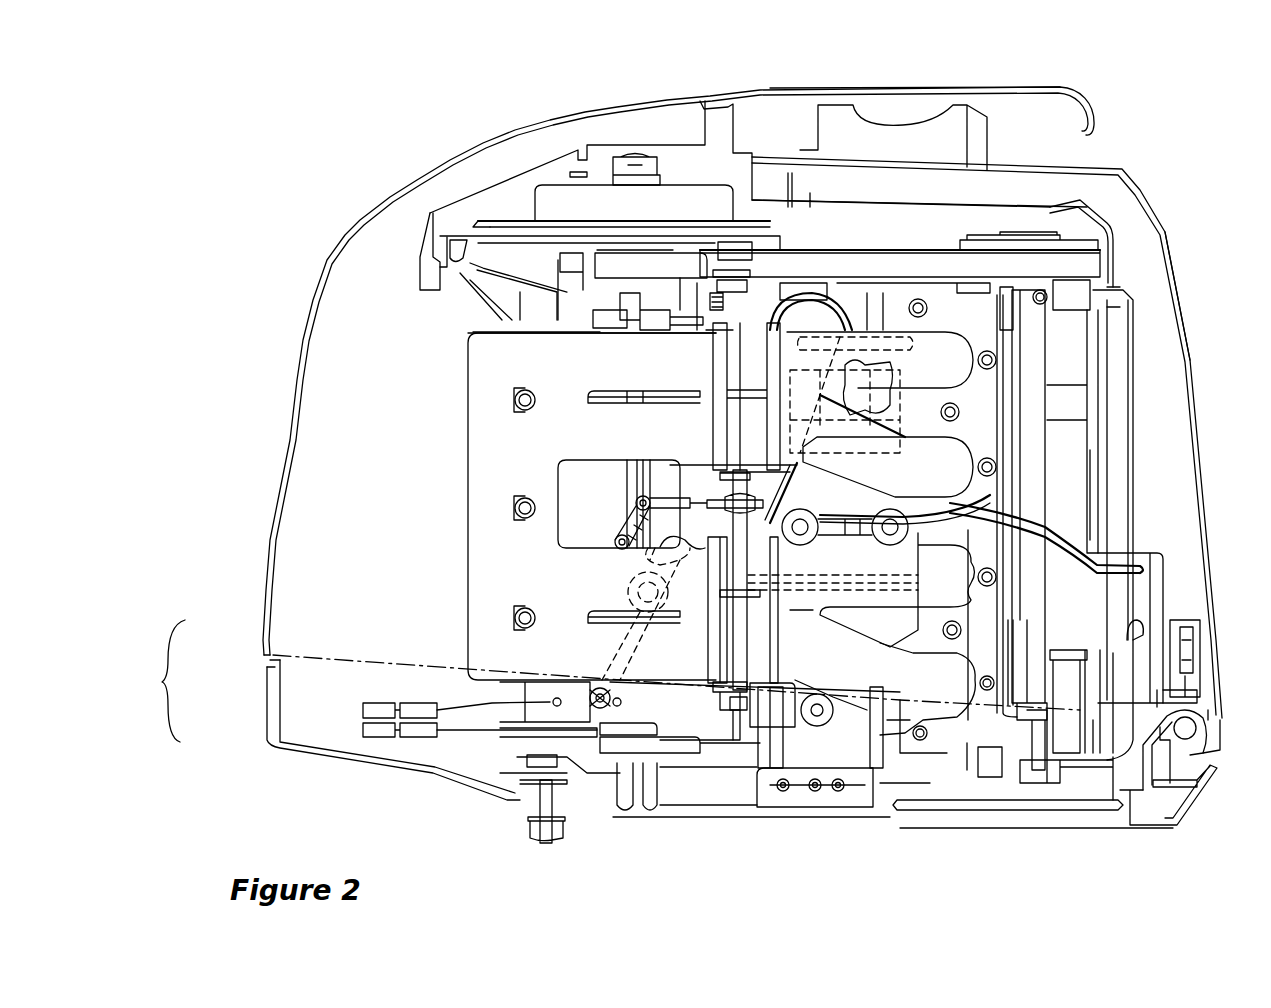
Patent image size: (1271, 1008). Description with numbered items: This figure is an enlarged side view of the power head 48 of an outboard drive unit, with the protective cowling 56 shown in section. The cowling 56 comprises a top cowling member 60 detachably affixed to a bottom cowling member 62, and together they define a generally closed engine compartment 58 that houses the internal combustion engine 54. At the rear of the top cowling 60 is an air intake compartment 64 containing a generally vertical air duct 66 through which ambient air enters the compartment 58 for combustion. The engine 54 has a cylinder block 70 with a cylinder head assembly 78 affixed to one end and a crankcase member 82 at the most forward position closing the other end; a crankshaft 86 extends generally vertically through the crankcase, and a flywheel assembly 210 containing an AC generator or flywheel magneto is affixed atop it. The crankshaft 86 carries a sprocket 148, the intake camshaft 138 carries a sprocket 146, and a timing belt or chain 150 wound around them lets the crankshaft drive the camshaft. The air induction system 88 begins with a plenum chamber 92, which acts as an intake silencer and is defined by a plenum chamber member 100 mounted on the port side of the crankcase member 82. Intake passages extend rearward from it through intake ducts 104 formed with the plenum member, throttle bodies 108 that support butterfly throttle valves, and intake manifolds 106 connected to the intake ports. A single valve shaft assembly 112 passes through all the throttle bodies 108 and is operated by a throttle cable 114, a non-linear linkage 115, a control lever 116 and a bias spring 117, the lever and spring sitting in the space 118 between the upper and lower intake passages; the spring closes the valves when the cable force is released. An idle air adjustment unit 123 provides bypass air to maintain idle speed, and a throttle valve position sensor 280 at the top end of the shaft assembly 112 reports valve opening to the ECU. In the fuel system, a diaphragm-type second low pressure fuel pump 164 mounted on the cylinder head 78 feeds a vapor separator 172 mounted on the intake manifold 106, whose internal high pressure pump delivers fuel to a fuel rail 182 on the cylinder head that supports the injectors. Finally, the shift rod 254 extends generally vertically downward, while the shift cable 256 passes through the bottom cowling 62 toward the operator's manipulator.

The power head 48 is at (1178, 290).
The internal combustion engine 54 is at (1143, 407).
The protective cowling 56 is at (155, 681).
The engine compartment 58 is at (362, 450).
The top cowling member 60 is at (265, 628).
The bottom cowling member 62 is at (268, 700).
The air intake compartment 64 is at (1018, 105).
The air duct 66 is at (838, 130).
The cylinder block 70 is at (833, 760).
The cylinder head assembly 78 is at (965, 752).
The crankcase member 82 is at (580, 485).
The crankshaft 86 is at (630, 155).
The air induction system 88 is at (440, 355).
The plenum chamber 92 is at (490, 470).
The plenum chamber member 100 is at (495, 572).
The intake duct 104 is at (677, 655).
The intake manifold 106 is at (950, 337).
The throttle body 108 is at (737, 355).
The valve shaft assembly 112 is at (735, 705).
The throttle cable 114 is at (418, 707).
The non-linear linkage 115 is at (600, 632).
The control lever 116 is at (685, 475).
The bias spring 117 is at (740, 455).
The space 118 is at (755, 483).
The idle air adjustment unit 123 is at (880, 395).
The intake camshaft 138 is at (1038, 232).
The camshaft sprocket 146 is at (1073, 243).
The crankshaft sprocket 148 is at (615, 267).
The timing belt or chain 150 is at (917, 268).
The second low pressure fuel pump 164 is at (1140, 600).
The vapor separator 172 is at (863, 625).
The fuel rail 182 is at (1035, 358).
The flywheel assembly 210 is at (545, 200).
The shift rod 254 is at (555, 805).
The shift cable 256 is at (415, 735).
The throttle valve position sensor 280 is at (790, 247).